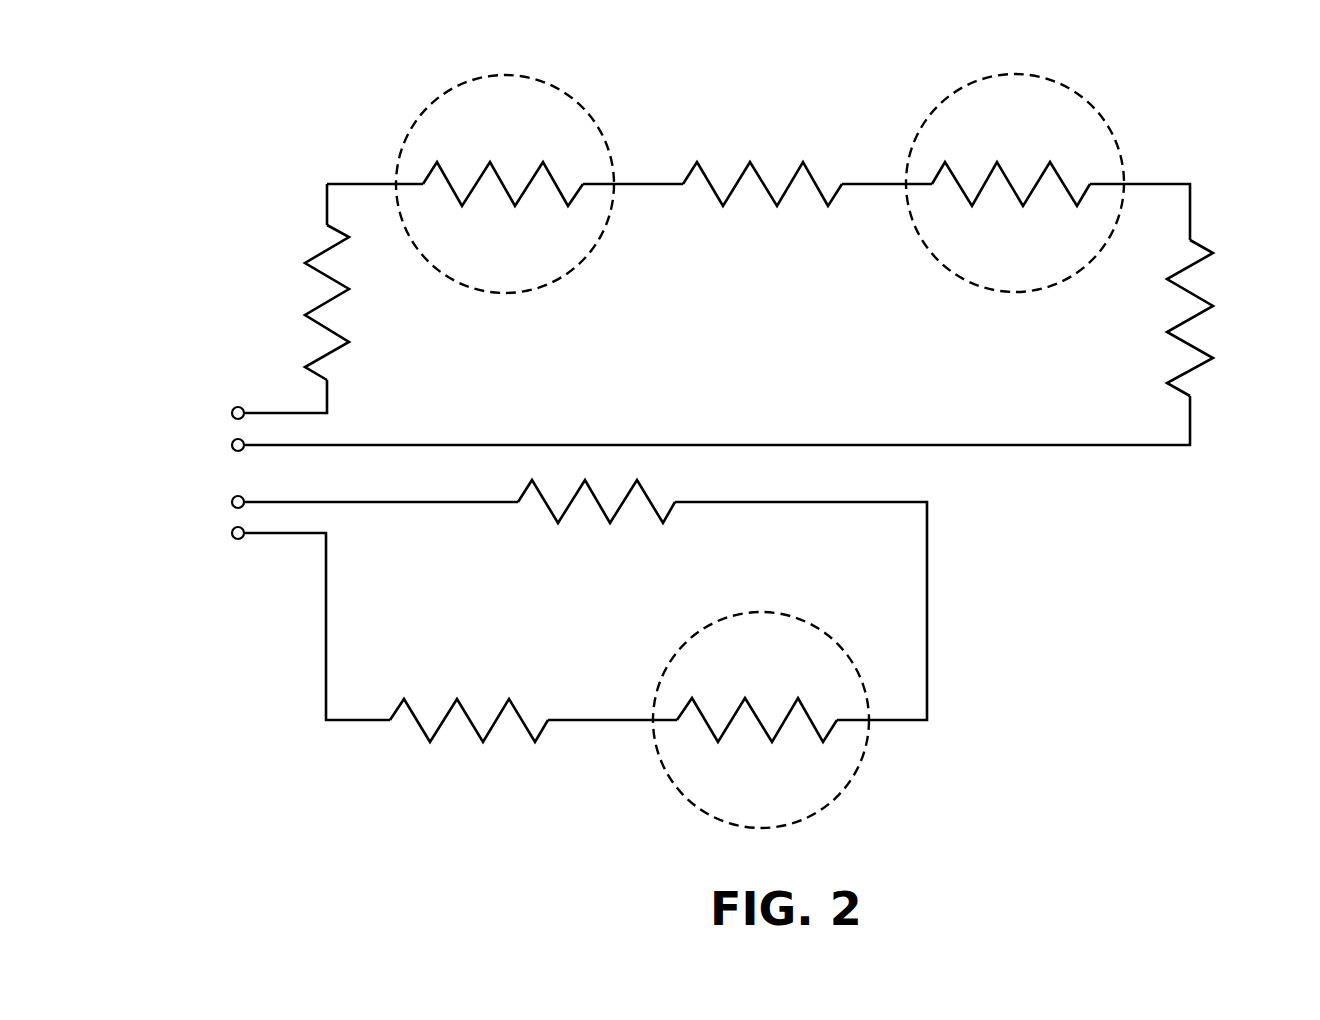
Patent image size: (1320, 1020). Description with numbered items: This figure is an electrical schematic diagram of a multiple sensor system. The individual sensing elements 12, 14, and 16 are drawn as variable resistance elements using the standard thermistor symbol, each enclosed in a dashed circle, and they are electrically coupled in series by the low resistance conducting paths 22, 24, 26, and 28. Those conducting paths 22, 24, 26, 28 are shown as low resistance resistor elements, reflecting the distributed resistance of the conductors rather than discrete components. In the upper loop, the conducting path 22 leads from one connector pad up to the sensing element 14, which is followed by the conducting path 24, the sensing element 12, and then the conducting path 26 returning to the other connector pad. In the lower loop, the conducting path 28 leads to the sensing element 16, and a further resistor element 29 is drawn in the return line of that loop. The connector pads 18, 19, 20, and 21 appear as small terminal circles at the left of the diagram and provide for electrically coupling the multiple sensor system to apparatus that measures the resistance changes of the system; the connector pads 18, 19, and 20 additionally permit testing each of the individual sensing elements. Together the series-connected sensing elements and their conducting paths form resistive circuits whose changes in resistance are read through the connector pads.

The individual sensing element 12 is at (1040, 177).
The individual sensing element 14 is at (537, 178).
The individual sensing element 16 is at (786, 734).
The connector pad 18 is at (204, 391).
The connector pad 19 is at (204, 424).
The connector pad 20 is at (204, 555).
The connector pad 21 is at (204, 524).
The low resistance conducting path 22 is at (293, 291).
The low resistance conducting path 24 is at (762, 162).
The low resistance conducting path 26 is at (1237, 318).
The low resistance conducting path 28 is at (440, 743).
The resistor 29 is at (587, 526).